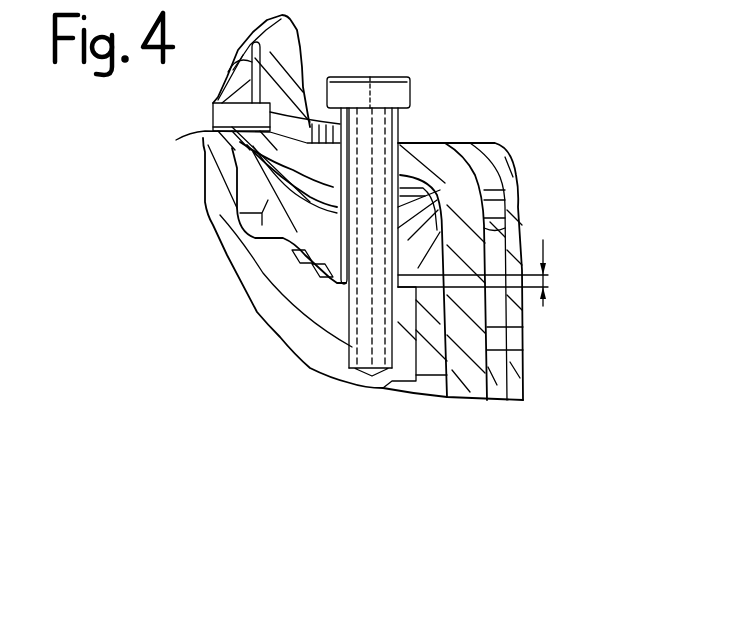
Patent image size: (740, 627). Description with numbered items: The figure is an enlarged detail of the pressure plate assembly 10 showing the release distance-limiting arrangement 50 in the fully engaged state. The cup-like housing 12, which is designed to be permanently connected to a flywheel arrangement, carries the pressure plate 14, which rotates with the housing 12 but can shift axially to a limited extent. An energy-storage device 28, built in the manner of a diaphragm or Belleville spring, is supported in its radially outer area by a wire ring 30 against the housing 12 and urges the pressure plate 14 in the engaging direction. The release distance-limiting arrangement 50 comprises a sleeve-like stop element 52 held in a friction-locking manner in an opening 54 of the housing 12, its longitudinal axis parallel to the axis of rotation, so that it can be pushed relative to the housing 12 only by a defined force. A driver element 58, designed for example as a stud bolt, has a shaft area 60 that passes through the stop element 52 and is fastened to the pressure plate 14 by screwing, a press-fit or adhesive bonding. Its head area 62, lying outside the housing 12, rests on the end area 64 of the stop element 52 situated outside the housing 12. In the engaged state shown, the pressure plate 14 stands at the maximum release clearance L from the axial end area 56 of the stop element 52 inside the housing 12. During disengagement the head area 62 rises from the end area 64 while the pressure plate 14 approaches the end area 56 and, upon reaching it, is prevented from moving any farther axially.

The pressure plate assembly 10 is at (165, 107).
The housing 12 is at (472, 170).
The pressure plate 14 is at (268, 299).
The energy-storage device 28 is at (237, 97).
The wire ring 30 is at (250, 60).
The release distance-limiting arrangement 50 is at (455, 72).
The sleeve-like stop element 52 is at (400, 128).
The opening 54 is at (448, 190).
The axial end area of the stop element 56 is at (341, 280).
The driver element 58 is at (455, 332).
The shaft area 60 is at (365, 221).
The head area 62 is at (384, 77).
The end area of the stop element 64 is at (205, 131).
The maximum release clearance L is at (546, 244).